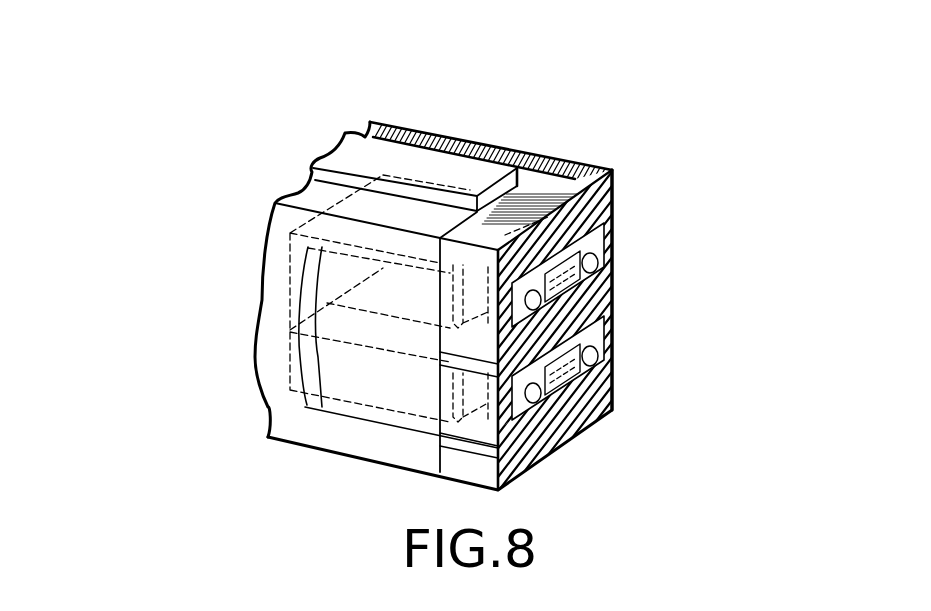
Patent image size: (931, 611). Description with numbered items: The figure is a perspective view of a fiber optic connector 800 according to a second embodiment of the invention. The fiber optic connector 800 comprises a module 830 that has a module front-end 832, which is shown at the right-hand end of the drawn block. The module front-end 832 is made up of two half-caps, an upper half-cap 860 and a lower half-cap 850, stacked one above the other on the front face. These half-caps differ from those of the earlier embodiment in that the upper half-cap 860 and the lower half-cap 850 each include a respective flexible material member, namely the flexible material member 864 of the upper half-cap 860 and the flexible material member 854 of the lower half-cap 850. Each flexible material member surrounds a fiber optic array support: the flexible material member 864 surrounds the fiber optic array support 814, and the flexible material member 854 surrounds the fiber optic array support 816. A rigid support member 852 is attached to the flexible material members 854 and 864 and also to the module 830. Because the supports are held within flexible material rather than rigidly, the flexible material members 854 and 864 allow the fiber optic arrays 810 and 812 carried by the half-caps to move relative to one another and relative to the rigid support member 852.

The fiber optic connector 800 is at (210, 182).
The module 830 is at (391, 244).
The module front-end 832 is at (566, 172).
The flexible material member 864 is at (617, 182).
The fiber optic array support 814 is at (614, 215).
The upper half-cap 860 is at (616, 252).
The fiber optic array 810 is at (563, 293).
The rigid support member 852 is at (575, 312).
The fiber optic array 812 is at (600, 338).
The lower half-cap 850 is at (595, 383).
The fiber optic array support 816 is at (570, 403).
The flexible material member 854 is at (540, 433).